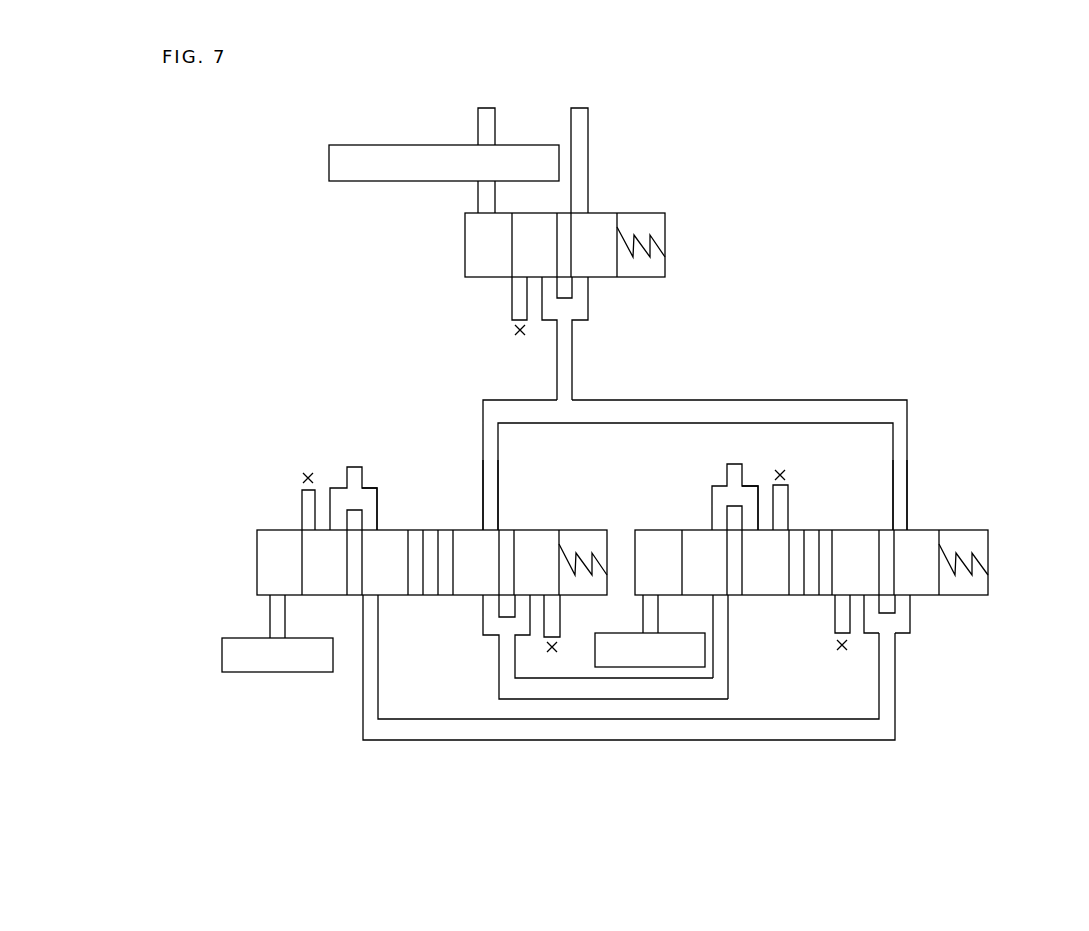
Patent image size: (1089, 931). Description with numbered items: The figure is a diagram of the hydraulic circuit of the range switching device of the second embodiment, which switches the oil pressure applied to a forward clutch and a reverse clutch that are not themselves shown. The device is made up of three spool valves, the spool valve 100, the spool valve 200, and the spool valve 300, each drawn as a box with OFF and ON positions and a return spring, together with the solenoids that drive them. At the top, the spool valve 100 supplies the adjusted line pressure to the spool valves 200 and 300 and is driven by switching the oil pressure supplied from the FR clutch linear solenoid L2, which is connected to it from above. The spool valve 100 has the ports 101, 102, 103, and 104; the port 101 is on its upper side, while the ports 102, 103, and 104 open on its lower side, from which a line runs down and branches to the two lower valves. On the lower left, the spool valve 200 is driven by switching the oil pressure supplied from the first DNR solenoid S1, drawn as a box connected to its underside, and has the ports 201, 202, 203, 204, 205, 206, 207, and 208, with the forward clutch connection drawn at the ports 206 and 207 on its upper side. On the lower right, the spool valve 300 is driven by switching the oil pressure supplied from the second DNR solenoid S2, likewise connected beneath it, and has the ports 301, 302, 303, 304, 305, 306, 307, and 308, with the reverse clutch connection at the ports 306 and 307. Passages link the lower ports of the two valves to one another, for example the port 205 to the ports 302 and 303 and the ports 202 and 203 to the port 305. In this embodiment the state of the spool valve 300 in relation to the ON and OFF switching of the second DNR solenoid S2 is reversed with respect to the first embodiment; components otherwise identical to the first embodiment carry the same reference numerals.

The FR clutch linear solenoid L2 is at (329, 158).
The spool valve 100 is at (465, 245).
The port 101 is at (587, 207).
The port 102 is at (588, 283).
The port 103 is at (542, 283).
The port 104 is at (512, 283).
The spool valve 200 is at (257, 548).
The port 201 is at (498, 528).
The port 202 is at (483, 603).
The port 203 is at (530, 603).
The port 204 is at (560, 603).
The port 205 is at (363, 603).
The port 206 is at (377, 527).
The port 207 is at (330, 527).
The port 208 is at (302, 527).
The first DNR solenoid S1 is at (218, 656).
The spool valve 300 is at (985, 548).
The port 301 is at (894, 523).
The port 302 is at (910, 600).
The port 303 is at (864, 600).
The port 304 is at (834, 600).
The port 305 is at (728, 600).
The port 306 is at (712, 521).
The port 307 is at (758, 521).
The port 308 is at (788, 521).
The second DNR solenoid S2 is at (655, 667).